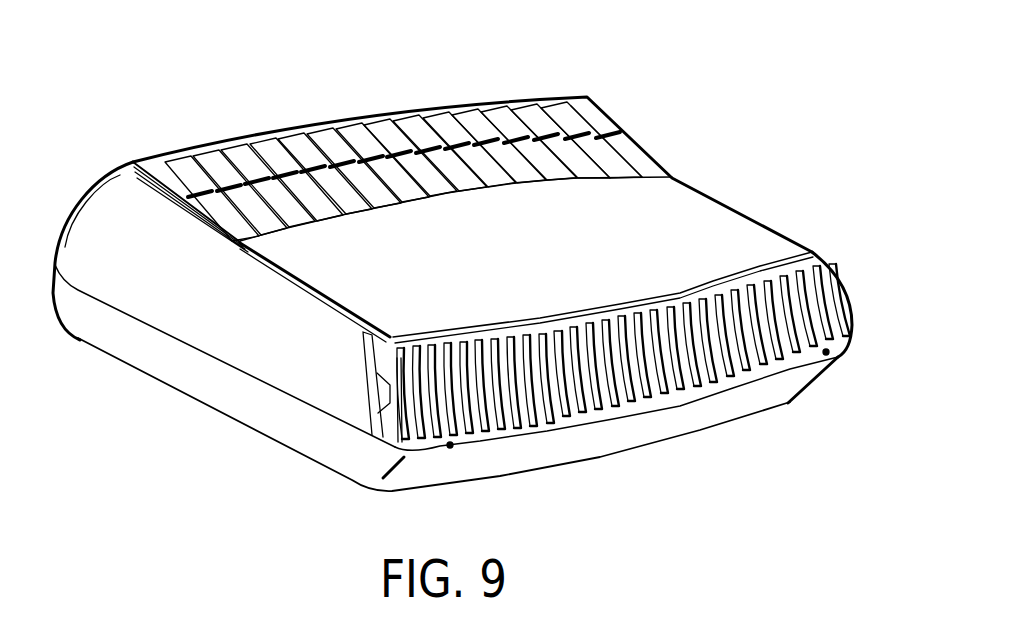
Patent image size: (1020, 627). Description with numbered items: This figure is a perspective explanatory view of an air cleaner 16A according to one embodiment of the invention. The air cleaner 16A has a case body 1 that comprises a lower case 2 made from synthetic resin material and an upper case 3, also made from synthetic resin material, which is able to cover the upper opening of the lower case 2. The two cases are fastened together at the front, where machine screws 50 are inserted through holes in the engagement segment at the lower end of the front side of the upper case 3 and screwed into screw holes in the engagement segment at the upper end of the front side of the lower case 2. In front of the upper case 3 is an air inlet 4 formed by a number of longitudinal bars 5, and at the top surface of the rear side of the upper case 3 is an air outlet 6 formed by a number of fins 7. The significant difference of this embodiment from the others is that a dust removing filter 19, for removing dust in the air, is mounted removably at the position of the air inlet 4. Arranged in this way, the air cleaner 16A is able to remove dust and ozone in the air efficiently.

The air cleaner 16A is at (699, 102).
The case body 1 is at (739, 206).
The lower case 2 is at (200, 397).
The upper case 3 is at (188, 322).
The air inlet 4 is at (657, 370).
The longitudinal bars 5 is at (513, 350).
The air outlet 6 is at (300, 138).
The fins 7 is at (264, 153).
The dust removing filter 19 is at (378, 400).
The machine screws 50 is at (455, 451).